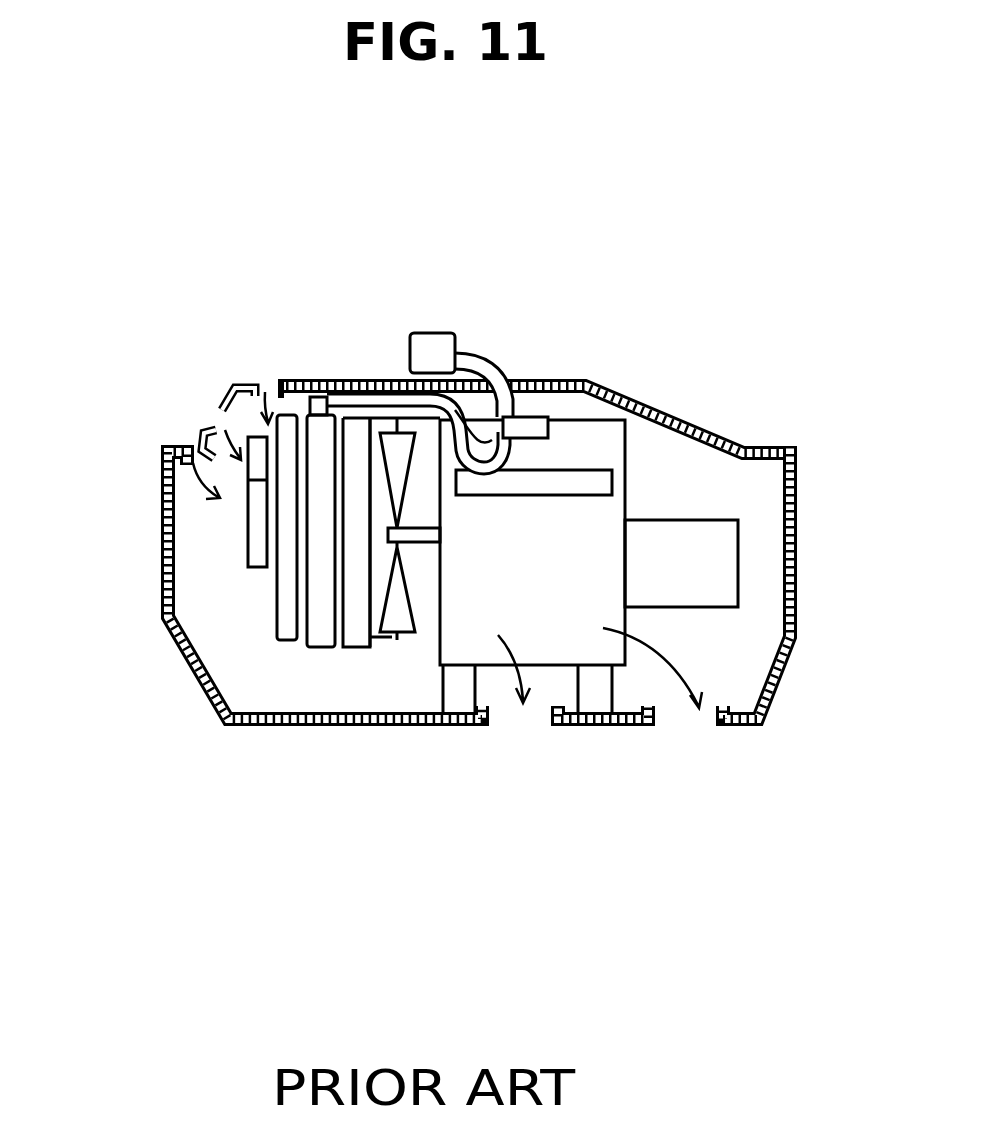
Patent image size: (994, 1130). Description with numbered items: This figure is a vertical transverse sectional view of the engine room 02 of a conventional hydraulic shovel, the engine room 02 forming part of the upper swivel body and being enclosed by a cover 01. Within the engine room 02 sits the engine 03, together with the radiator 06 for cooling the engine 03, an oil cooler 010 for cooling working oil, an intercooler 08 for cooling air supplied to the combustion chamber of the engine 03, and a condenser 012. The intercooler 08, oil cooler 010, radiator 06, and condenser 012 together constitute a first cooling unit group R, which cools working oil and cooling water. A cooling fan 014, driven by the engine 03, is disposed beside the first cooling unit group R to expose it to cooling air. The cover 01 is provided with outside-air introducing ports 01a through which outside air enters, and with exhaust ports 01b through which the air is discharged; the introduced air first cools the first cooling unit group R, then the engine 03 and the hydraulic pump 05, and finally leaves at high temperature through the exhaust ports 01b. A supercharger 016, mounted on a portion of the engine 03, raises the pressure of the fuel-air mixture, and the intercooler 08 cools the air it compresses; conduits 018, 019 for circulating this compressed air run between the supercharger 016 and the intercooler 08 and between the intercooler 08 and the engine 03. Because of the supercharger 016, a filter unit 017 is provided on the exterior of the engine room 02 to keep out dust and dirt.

The cover 01 is at (683, 405).
The outside-air introducing ports 01a is at (272, 384).
The exhaust ports 01b is at (682, 727).
The engine room 02 is at (753, 497).
The engine 03 is at (600, 440).
The hydraulic pump 05 is at (702, 545).
The radiator 06 is at (358, 645).
The intercooler 08 is at (277, 647).
The oil cooler 010 is at (312, 647).
The condenser 012 is at (246, 553).
The cooling fan 014 is at (397, 622).
The supercharger 016 is at (533, 423).
The filter unit 017 is at (433, 340).
The conduit 018 is at (387, 398).
The conduit 019 is at (337, 383).
The first cooling unit group R is at (370, 853).